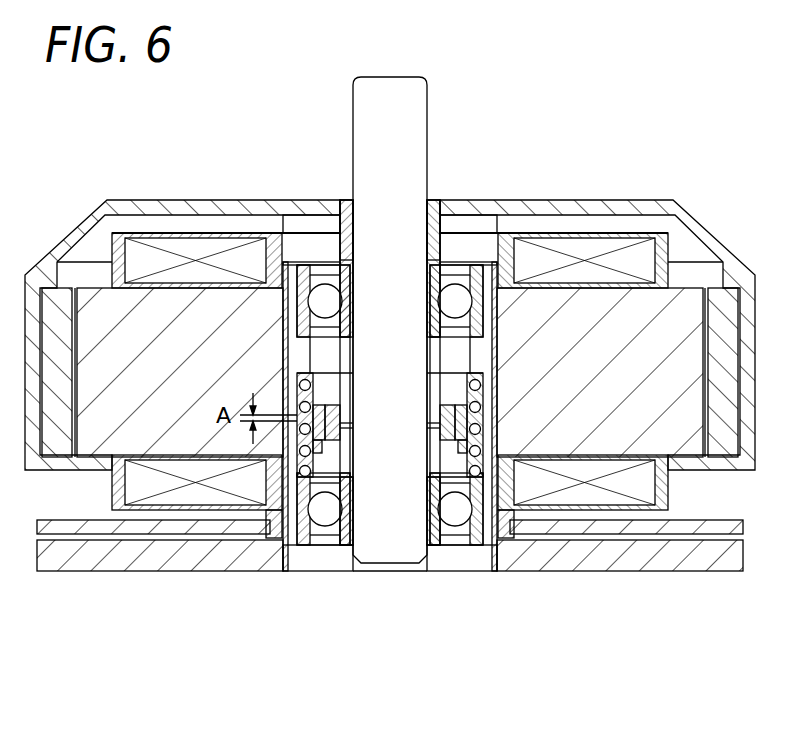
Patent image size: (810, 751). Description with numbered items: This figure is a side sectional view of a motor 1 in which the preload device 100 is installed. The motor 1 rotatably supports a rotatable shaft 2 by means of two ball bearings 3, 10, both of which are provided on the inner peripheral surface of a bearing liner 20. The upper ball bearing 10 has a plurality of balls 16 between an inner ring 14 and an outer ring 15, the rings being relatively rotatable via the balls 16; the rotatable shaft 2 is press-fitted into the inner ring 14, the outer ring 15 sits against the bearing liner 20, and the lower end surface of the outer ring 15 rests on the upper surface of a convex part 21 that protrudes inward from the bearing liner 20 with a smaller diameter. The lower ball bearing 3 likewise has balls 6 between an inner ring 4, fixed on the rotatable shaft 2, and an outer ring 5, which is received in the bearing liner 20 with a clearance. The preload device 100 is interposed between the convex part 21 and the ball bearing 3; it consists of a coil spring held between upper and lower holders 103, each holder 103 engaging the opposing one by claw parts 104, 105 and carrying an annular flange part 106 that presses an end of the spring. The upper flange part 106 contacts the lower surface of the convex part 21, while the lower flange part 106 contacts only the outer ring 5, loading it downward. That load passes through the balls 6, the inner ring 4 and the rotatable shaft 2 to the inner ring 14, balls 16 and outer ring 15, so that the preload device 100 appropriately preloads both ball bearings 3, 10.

The motor 1 is at (566, 104).
The rotatable shaft 2 is at (395, 557).
The ball bearing 3 is at (312, 545).
The inner ring 4 is at (347, 545).
The outer ring 5 is at (305, 548).
The balls 6 is at (326, 525).
The ball bearing 10 is at (300, 280).
The inner ring 14 is at (346, 255).
The outer ring 15 is at (290, 262).
The balls 16 is at (326, 300).
The bearing liner 20 is at (306, 394).
The convex part 21 is at (300, 407).
The preload device 100 is at (494, 441).
The holder 103 is at (442, 387).
The claw part 104 is at (207, 457).
The claw part 105 is at (125, 250).
The flange part 106 is at (270, 527).